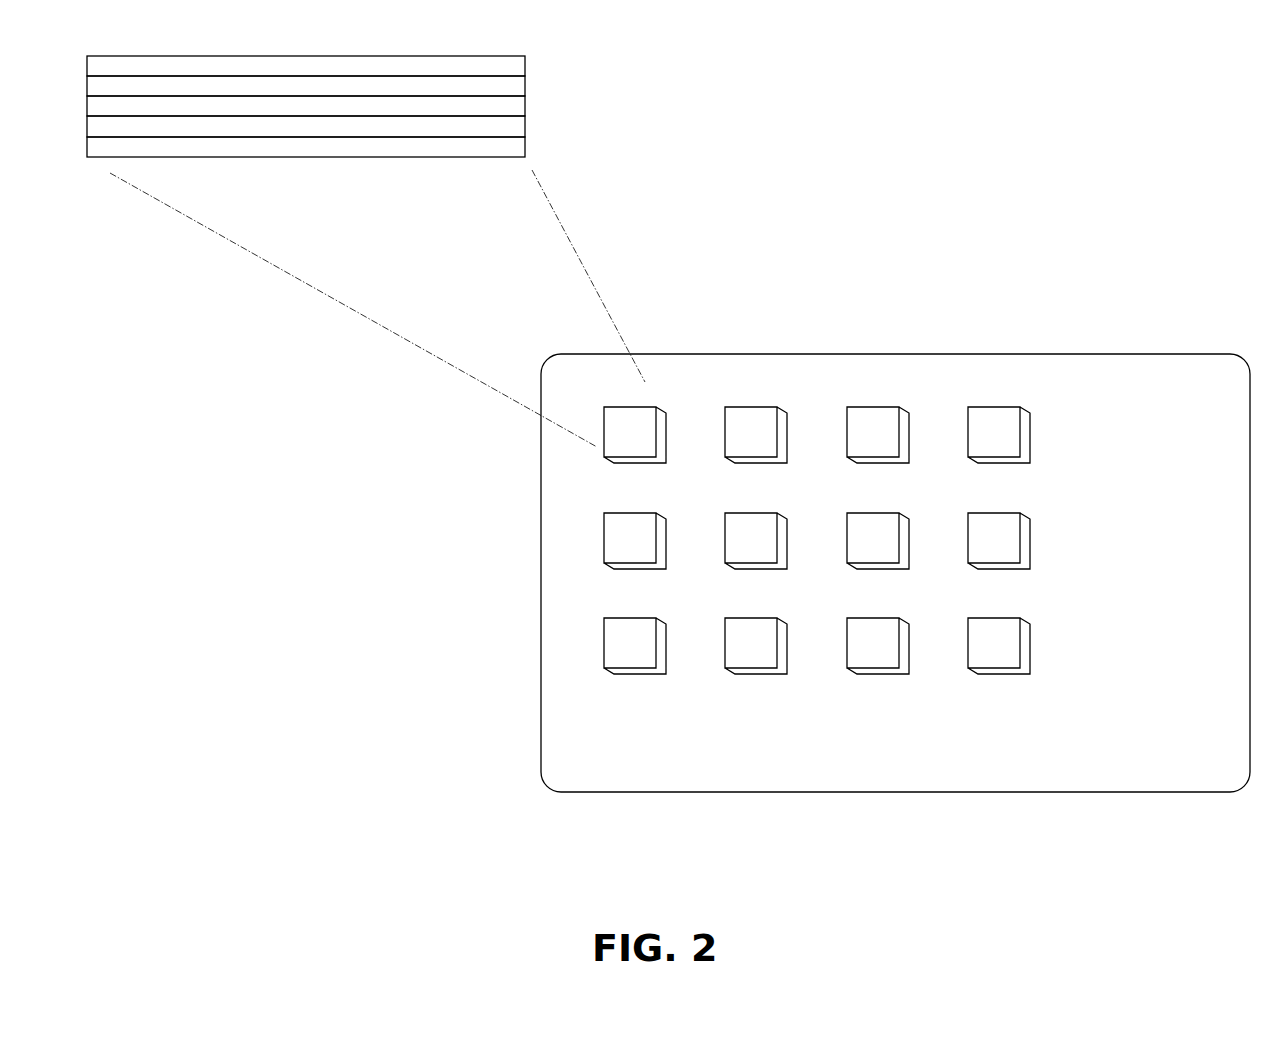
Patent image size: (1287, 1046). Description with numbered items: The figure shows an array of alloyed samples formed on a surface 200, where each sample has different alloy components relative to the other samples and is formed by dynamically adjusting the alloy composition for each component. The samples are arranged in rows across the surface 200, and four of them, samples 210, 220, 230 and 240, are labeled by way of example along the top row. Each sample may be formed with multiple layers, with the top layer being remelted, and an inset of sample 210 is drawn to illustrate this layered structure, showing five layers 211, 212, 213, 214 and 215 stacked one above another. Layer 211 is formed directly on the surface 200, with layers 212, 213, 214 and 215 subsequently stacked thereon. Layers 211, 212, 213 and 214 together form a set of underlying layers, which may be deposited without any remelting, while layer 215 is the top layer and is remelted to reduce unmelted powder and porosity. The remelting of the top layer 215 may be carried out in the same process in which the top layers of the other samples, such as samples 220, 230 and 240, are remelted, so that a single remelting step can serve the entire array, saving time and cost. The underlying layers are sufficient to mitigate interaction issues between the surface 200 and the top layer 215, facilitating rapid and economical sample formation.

The surface 200 is at (1183, 378).
The sample 210 is at (640, 406).
The sample 220 is at (761, 406).
The sample 230 is at (883, 406).
The sample 240 is at (1004, 406).
The layer 211 is at (525, 150).
The layer 212 is at (525, 128).
The layer 213 is at (525, 106).
The layer 214 is at (525, 84).
The top layer 215 is at (525, 62).